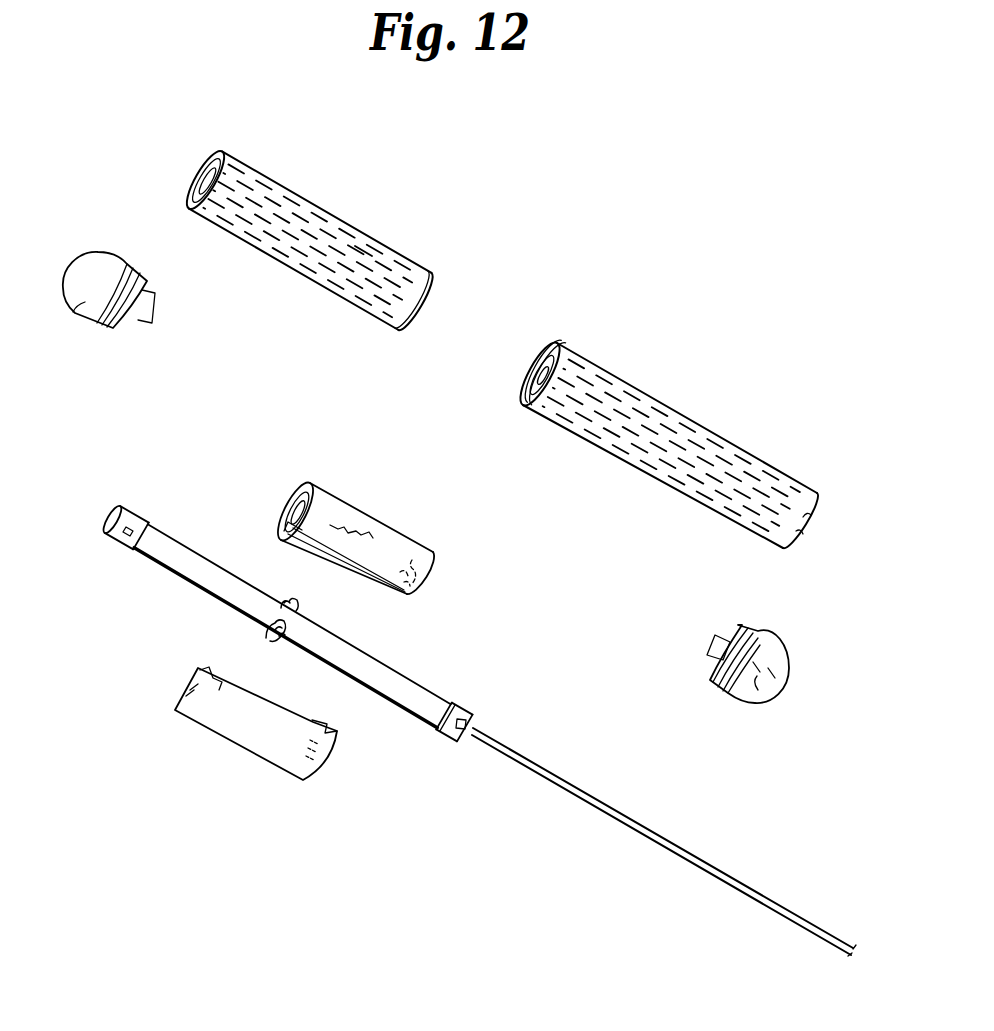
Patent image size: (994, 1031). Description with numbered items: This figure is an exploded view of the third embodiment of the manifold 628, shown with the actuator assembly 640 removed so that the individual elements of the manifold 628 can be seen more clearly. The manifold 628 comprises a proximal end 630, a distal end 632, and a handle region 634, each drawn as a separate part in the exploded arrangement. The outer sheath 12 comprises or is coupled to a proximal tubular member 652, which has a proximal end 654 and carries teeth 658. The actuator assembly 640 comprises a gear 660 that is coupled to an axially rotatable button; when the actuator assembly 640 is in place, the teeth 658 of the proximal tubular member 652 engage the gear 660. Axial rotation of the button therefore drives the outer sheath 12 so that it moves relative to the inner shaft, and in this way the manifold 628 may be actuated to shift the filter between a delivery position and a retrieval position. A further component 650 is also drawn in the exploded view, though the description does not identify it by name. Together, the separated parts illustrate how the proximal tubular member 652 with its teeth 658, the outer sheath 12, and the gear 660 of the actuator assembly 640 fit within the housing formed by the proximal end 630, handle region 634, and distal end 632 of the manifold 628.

The outer sheath 12 is at (684, 857).
The manifold 628 is at (305, 197).
The proximal end 630 is at (79, 302).
The distal end 632 is at (753, 699).
The handle region 634 is at (372, 257).
The actuator assembly 640 is at (367, 538).
The collar 650 is at (453, 740).
The proximal tubular member 652 is at (415, 698).
The proximal end 654 is at (105, 534).
The teeth 658 is at (270, 627).
The gear 660 is at (342, 525).